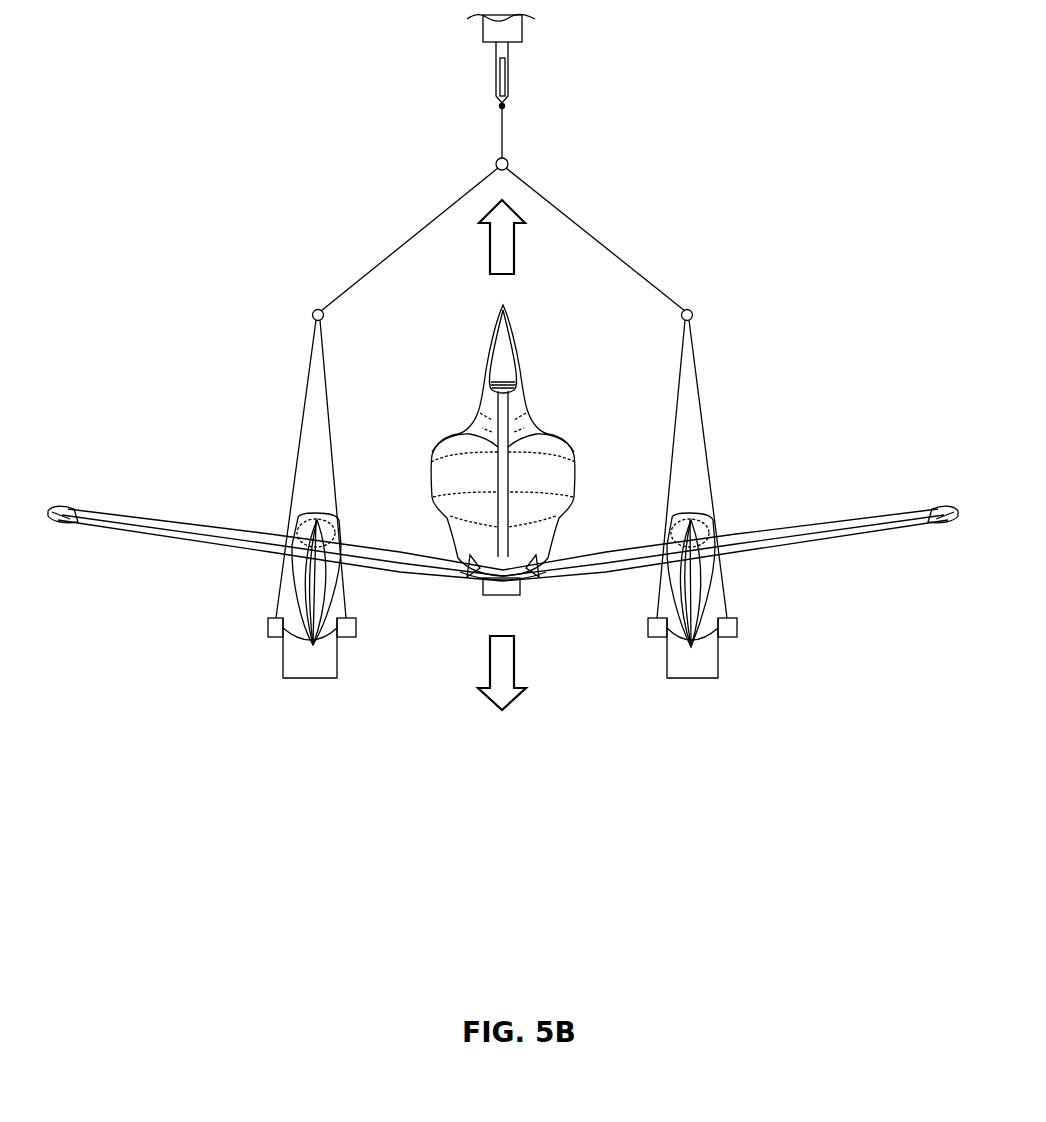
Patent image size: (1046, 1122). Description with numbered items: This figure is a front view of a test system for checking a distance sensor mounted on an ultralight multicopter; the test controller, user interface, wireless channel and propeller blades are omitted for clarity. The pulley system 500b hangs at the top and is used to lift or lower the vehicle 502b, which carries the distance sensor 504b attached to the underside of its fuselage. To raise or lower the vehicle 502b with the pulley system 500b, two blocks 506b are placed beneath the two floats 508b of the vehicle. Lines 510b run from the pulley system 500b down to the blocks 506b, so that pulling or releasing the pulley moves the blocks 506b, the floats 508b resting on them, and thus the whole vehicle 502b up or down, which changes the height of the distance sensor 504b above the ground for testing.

The pulley system 500b is at (525, 33).
The vehicle 502b is at (866, 518).
The distance sensor 504b is at (523, 590).
The blocks 506b is at (720, 660).
The floats 508b is at (293, 599).
The lines 510b is at (700, 383).